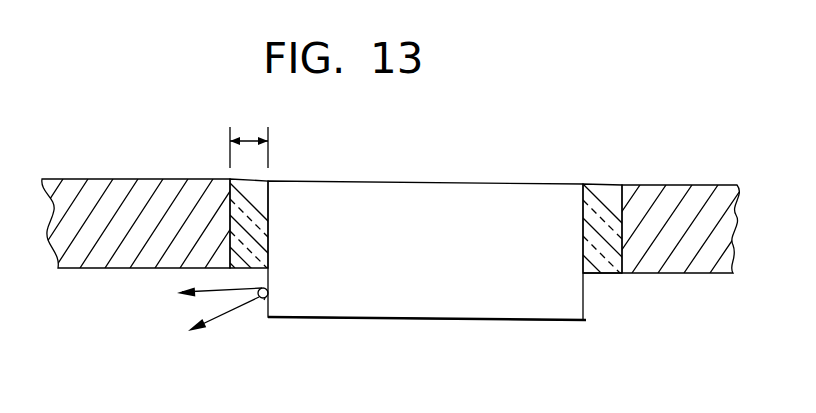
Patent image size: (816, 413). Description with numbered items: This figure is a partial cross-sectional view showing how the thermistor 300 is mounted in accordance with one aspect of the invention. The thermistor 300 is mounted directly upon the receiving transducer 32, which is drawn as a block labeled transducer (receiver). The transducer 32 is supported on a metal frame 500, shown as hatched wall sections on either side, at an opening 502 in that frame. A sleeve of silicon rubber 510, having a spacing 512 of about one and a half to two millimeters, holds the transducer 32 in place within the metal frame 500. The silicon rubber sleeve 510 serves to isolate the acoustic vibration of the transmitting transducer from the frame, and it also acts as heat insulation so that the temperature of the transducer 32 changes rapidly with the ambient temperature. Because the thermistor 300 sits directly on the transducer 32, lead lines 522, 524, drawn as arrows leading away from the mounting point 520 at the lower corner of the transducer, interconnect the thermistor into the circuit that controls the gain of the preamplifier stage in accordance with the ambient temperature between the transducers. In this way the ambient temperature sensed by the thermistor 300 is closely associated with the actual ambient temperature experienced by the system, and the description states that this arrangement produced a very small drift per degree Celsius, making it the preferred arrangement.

The metal frame 500 is at (138, 188).
The spacing 512 is at (249, 135).
The opening 502 is at (619, 192).
The receiving transducer 32 is at (521, 312).
The sleeve of silicon rubber 510 is at (603, 277).
The sound source point / edge 520 is at (270, 294).
The lead line 522 is at (206, 295).
The lead line 524 is at (223, 322).
The thermistor 300 is at (264, 300).